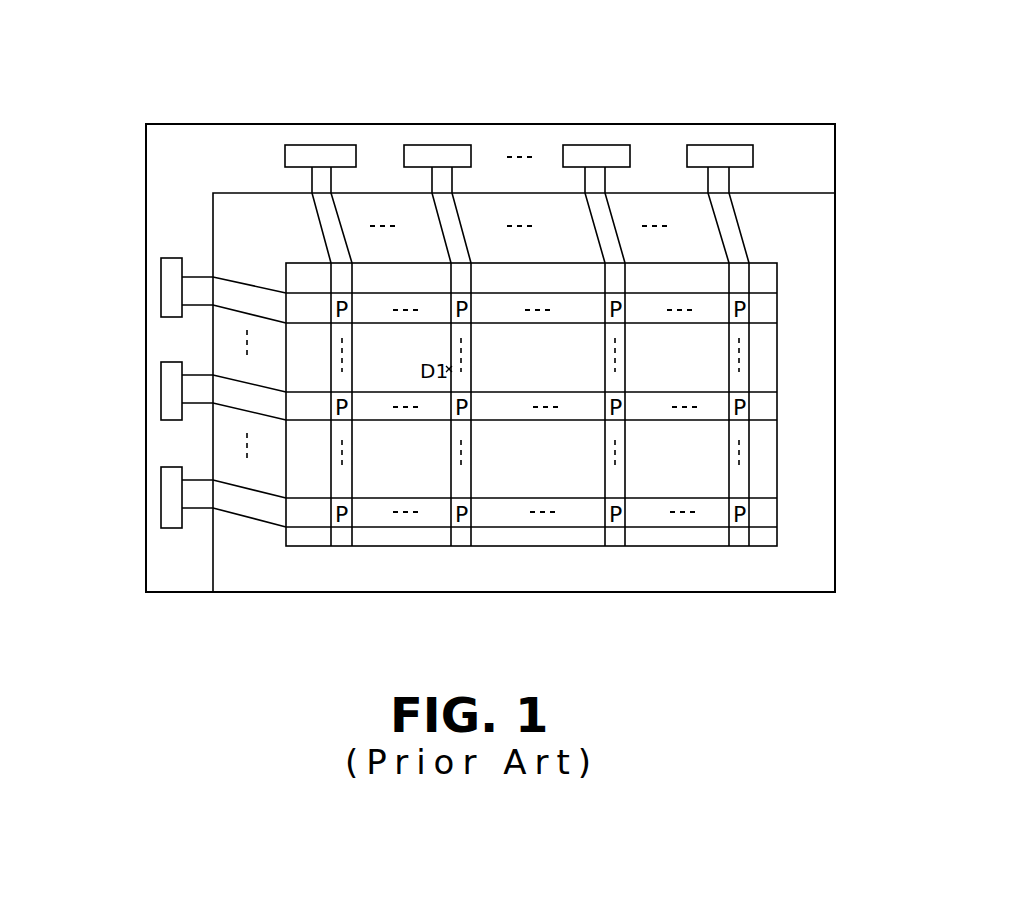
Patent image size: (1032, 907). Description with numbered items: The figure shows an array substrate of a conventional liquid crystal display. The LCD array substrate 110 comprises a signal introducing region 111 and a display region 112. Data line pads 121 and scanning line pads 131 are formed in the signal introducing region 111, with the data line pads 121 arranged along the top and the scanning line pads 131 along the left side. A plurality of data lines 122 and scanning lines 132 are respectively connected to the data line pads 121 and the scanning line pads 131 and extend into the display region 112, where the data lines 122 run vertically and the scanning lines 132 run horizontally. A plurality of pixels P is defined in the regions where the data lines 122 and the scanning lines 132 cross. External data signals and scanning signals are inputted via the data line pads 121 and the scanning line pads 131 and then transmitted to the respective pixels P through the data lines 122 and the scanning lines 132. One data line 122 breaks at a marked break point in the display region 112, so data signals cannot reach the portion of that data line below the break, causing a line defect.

The LCD array substrate 110 is at (130, 115).
The signal introducing region 111 is at (787, 175).
The display region 112 is at (665, 473).
The data line pads 121 is at (430, 155).
The data lines 122 is at (752, 362).
The scanning line pads 131 is at (168, 500).
The scanning lines 132 is at (435, 528).